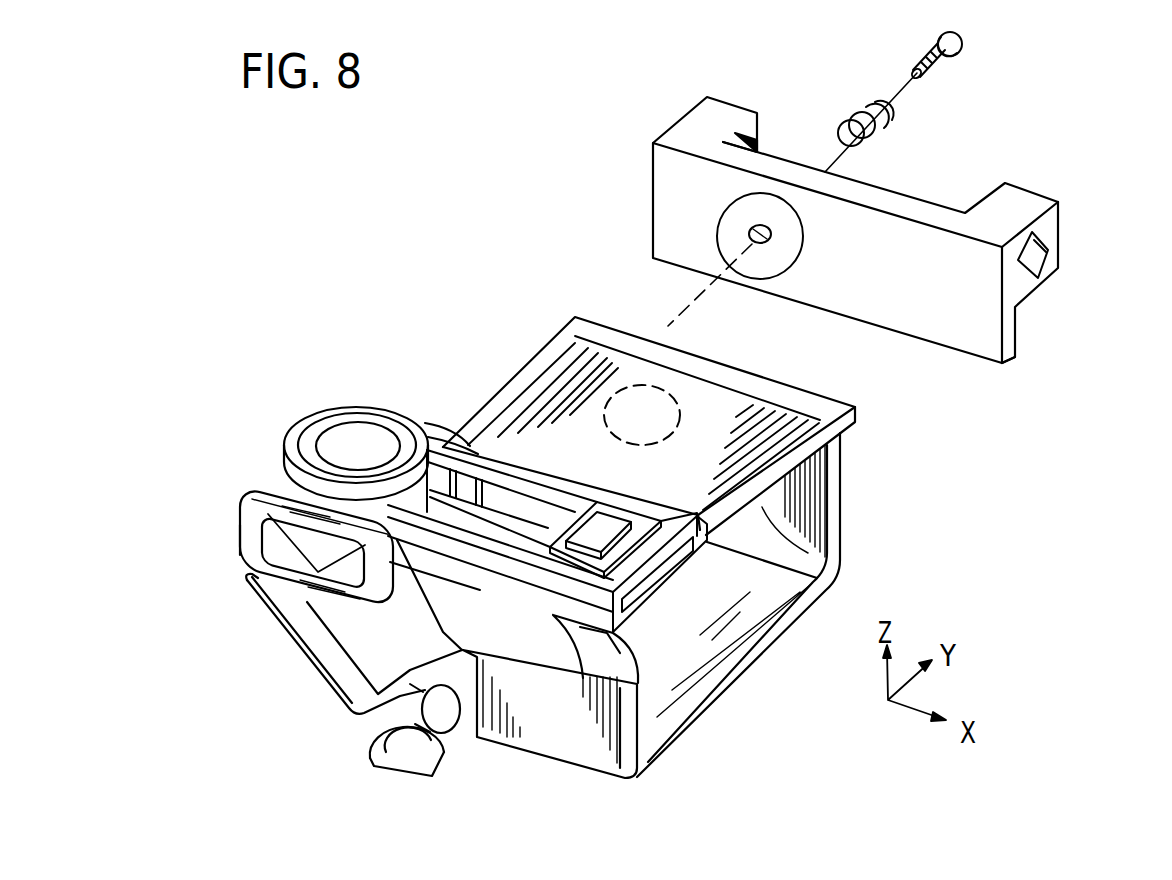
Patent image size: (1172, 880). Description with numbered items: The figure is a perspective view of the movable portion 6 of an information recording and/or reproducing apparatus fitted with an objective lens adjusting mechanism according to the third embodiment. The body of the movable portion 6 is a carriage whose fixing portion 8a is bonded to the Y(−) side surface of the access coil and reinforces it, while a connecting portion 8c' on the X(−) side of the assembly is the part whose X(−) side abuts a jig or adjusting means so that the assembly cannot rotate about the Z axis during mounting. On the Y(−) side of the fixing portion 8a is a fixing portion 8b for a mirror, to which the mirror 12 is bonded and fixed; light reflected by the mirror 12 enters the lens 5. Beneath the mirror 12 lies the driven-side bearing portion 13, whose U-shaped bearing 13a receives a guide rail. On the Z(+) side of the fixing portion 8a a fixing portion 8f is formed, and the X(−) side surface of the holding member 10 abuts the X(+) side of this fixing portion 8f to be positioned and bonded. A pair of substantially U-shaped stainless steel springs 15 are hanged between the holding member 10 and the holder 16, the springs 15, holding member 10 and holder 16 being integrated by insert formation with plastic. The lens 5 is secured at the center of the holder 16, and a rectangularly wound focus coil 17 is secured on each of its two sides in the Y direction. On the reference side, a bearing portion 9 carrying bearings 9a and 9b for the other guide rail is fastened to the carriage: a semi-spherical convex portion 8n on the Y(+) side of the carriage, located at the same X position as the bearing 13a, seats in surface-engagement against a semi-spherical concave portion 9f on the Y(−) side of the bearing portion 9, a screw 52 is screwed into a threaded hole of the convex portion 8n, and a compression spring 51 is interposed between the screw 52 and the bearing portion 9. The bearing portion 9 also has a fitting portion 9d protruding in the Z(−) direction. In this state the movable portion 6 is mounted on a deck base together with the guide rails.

The lens 5 is at (342, 433).
The movable portion 6 is at (735, 750).
The fixing portion 8a is at (552, 655).
The fixing portion for a mirror 8b is at (313, 670).
The connecting portion 8c' is at (676, 437).
The fixing portion 8f is at (620, 512).
The convex portion 8n is at (683, 407).
The bearing portion 9 is at (750, 91).
The bearing 9a is at (750, 140).
The bearing 9b is at (1052, 237).
The fitting portion 9d is at (947, 333).
The concave portion 9f is at (714, 232).
The holding member 10 is at (683, 568).
The mirror 12 is at (302, 618).
The bearing portion 13 is at (415, 773).
The U-shaped bearing 13a is at (373, 727).
The spring 15 is at (520, 478).
The holder 16 is at (292, 473).
The focus coil 17 is at (437, 423).
The compression spring 51 is at (886, 122).
The screw 52 is at (962, 48).